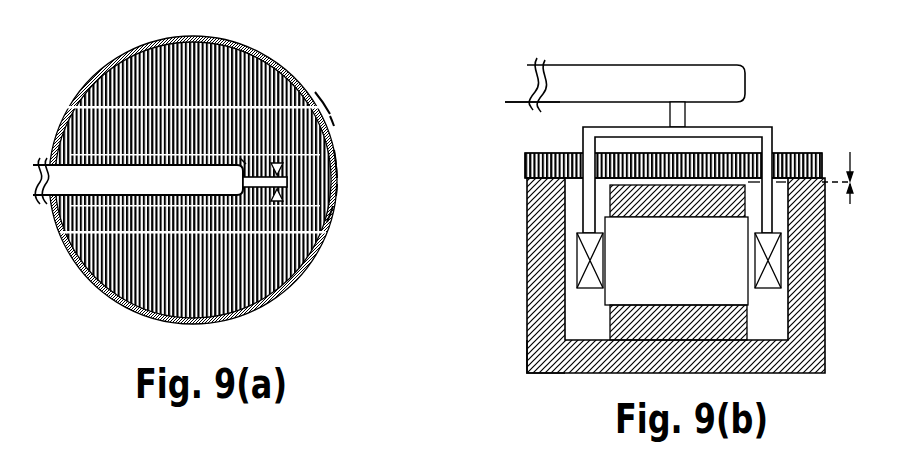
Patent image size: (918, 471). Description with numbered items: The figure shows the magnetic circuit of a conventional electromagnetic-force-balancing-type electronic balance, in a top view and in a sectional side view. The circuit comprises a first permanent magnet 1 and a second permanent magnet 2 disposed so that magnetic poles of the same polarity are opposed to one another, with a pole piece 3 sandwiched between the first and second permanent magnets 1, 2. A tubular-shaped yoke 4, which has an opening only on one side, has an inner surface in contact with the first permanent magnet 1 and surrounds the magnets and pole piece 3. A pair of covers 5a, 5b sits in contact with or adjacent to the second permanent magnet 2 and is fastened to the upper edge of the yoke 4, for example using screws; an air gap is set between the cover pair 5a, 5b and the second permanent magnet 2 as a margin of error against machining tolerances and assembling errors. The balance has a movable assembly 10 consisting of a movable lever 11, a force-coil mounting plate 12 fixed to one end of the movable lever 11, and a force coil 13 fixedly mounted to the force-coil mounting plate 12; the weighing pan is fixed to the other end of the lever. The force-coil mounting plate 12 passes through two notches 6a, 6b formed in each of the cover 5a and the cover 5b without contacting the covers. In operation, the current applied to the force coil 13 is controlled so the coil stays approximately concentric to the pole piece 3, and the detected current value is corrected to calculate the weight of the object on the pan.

In FIG. 9B, the first permanent magnet 1 is at (743, 324).
In FIG. 9B, the second permanent magnet 2 is at (610, 205).
In FIG. 9B, the pole piece 3 is at (733, 236).
In FIG. 9A, the yoke 4 is at (300, 273).
In FIG. 9B, the yoke 4 is at (528, 338).
In FIG. 9A, the cover 5a is at (315, 103).
In FIG. 9B, the cover 5a is at (802, 151).
In FIG. 9A, the cover 5b is at (328, 214).
In FIG. 9B, the cover 5b is at (696, 178).
In FIG. 9A, the notch 6a is at (334, 160).
In FIG. 9A, the notch 6b is at (335, 191).
In FIG. 9B, the movable assembly 10 is at (767, 58).
In FIG. 9A, the movable lever 11 is at (430, 129).
In FIG. 9B, the movable lever 11 is at (528, 107).
In FIG. 9A, the force-coil mounting plate 12 is at (428, 158).
In FIG. 9B, the force-coil mounting plate 12 is at (583, 130).
In FIG. 9B, the force coil 13 is at (580, 268).